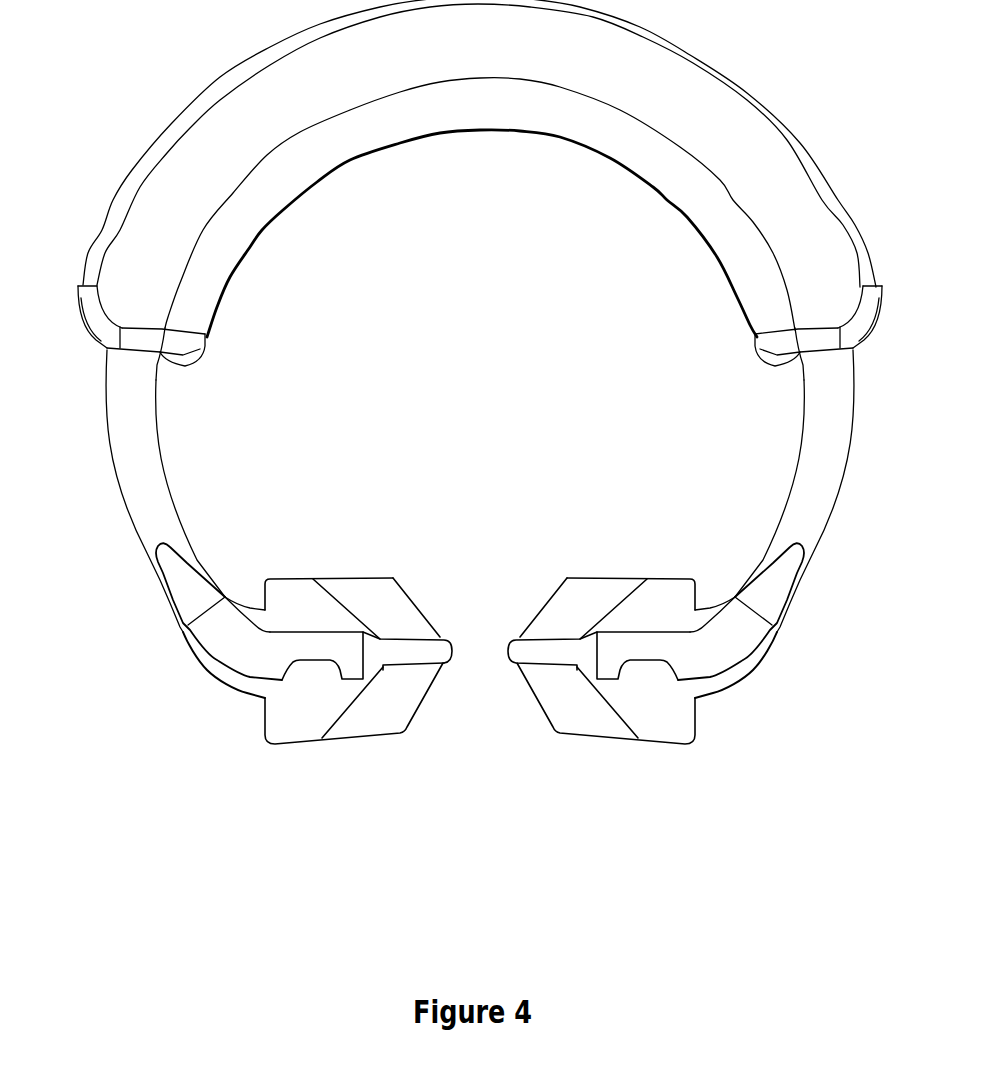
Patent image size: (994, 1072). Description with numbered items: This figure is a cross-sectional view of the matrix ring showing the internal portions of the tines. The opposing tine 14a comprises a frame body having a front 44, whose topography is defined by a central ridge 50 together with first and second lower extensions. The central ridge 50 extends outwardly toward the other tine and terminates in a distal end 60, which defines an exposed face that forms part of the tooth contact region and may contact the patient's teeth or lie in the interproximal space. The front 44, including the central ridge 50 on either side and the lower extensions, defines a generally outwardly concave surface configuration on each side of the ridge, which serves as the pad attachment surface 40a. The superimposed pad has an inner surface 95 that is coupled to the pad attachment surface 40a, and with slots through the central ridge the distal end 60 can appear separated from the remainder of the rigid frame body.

The opposing tine 14a is at (256, 537).
The pad attachment surface 40a is at (312, 737).
The front 44 is at (345, 584).
The distal end 60 is at (452, 626).
The central ridge 50 is at (401, 686).
The inner surface 95 is at (366, 720).